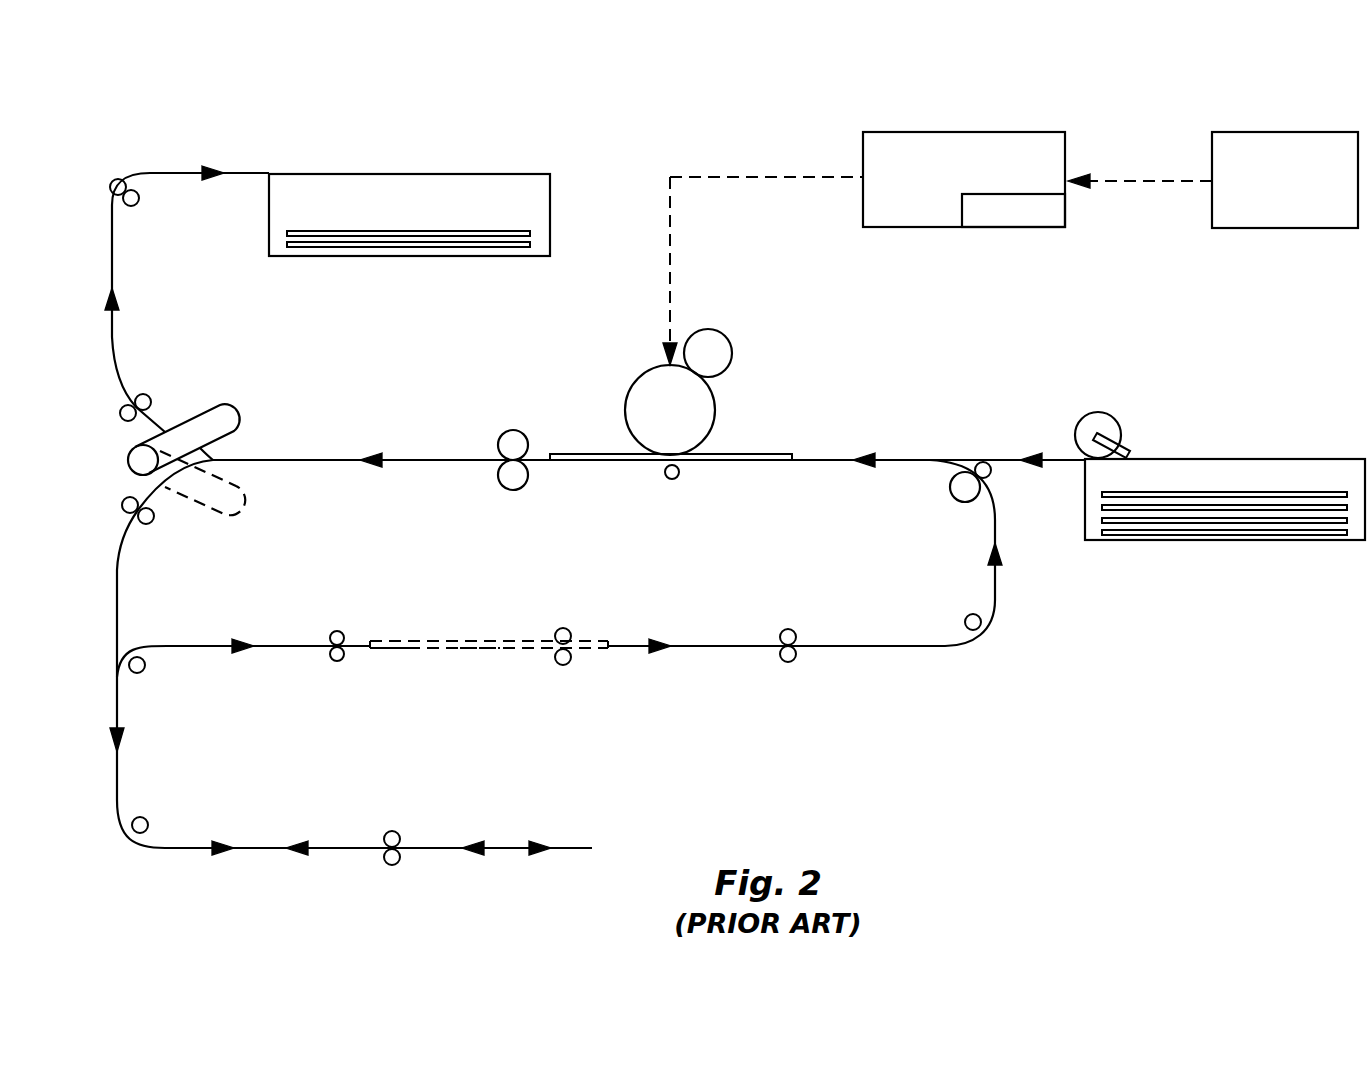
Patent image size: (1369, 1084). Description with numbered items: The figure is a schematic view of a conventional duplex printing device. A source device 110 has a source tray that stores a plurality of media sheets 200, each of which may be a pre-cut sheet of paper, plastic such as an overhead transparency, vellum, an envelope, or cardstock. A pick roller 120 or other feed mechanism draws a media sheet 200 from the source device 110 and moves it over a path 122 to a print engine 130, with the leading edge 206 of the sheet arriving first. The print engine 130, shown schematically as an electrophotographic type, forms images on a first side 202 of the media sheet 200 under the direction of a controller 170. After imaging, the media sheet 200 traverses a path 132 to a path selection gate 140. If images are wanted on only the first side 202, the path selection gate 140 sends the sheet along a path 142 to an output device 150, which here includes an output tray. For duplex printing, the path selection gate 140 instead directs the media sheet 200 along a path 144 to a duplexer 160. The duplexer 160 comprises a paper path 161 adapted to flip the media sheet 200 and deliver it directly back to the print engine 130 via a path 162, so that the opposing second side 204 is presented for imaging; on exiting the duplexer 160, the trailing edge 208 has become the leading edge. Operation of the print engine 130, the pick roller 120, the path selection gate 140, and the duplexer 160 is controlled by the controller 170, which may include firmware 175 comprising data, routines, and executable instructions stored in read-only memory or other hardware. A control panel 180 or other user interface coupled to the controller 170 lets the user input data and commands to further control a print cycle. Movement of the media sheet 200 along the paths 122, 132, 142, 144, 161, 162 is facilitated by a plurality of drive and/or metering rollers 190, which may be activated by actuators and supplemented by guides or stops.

The source device 110 is at (1262, 542).
The pick roller 120 is at (1097, 412).
The path 122 is at (913, 458).
The print engine 130 is at (732, 389).
The path 132 is at (287, 458).
The path selection gate 140 is at (190, 417).
The path 142 is at (120, 360).
The path 144 is at (120, 607).
The output device 150 is at (552, 210).
The duplexer 160 is at (500, 803).
The paper path 161 is at (355, 848).
The path 162 is at (755, 645).
The controller 170 is at (941, 179).
The firmware 175 is at (1035, 215).
The control panel 180 is at (1285, 180).
The drive and/or metering rollers 190 is at (116, 178).
The media sheet 200 is at (427, 242).
The first side 202 is at (740, 455).
The second side 204 is at (592, 462).
The leading edge 206 is at (550, 453).
The trailing edge 208 is at (792, 462).